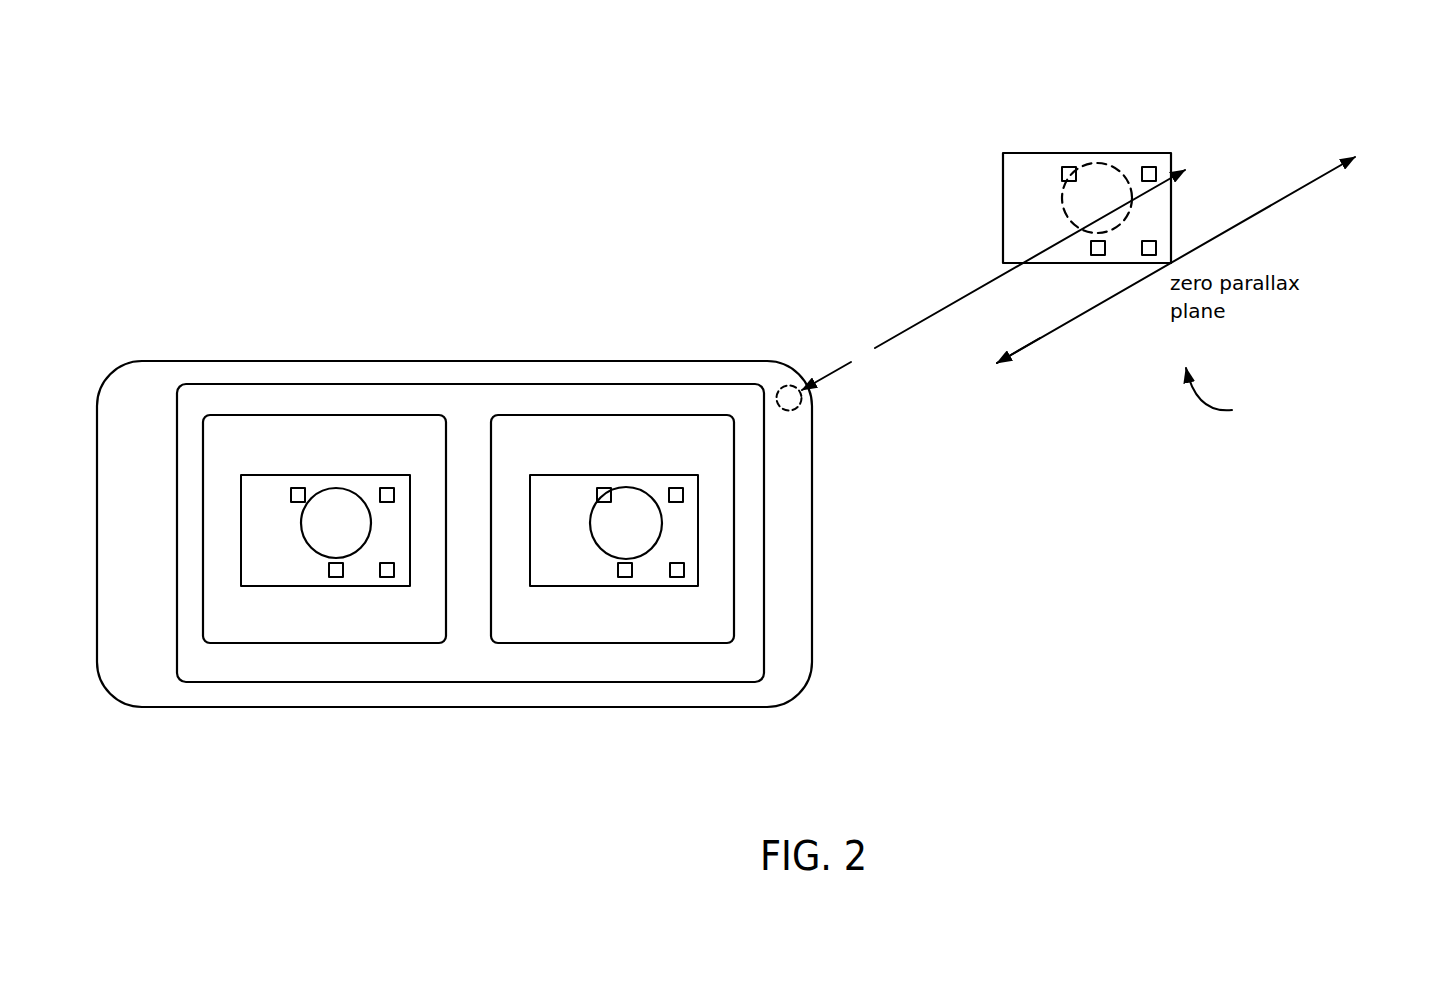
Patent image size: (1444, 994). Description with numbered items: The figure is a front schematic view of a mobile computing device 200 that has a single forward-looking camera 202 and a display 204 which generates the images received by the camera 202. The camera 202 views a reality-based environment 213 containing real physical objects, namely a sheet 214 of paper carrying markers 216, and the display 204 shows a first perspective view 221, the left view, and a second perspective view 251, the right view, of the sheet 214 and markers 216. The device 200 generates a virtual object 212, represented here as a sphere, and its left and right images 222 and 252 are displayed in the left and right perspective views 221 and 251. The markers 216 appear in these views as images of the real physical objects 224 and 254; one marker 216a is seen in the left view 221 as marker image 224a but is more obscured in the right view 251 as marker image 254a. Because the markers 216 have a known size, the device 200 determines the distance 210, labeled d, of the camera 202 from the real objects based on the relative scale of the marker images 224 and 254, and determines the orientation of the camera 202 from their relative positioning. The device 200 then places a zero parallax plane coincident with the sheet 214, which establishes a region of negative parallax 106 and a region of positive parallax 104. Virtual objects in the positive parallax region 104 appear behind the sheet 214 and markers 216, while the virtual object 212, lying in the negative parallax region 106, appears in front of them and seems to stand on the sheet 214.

The mobile computing device 200 is at (490, 360).
The camera 202 is at (787, 412).
The display 204 is at (458, 682).
The first perspective view 221 is at (278, 643).
The left image of the virtual object 222 is at (327, 503).
The images of the real physical objects 224 is at (387, 562).
The marker image 224a is at (298, 487).
The second perspective view 251 is at (627, 643).
The right image of the virtual object 252 is at (637, 503).
The images of the real physical objects 254 is at (677, 503).
The marker image 254a is at (604, 487).
The distance 210 is at (907, 338).
The virtual object 212 is at (1062, 196).
The sheet 214 is at (1150, 153).
The markers 216 is at (1158, 170).
The marker 216a is at (1070, 167).
The region of positive parallax 104 is at (1308, 183).
The region of negative parallax 106 is at (1038, 336).
The reality-based environment 213 is at (1230, 395).